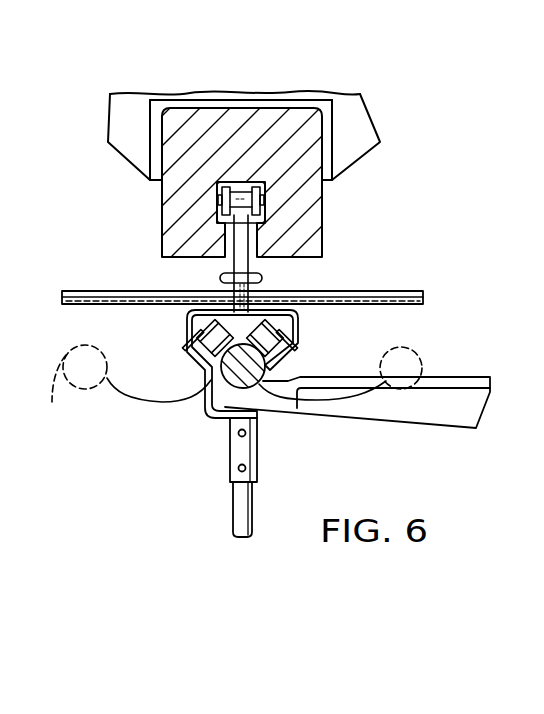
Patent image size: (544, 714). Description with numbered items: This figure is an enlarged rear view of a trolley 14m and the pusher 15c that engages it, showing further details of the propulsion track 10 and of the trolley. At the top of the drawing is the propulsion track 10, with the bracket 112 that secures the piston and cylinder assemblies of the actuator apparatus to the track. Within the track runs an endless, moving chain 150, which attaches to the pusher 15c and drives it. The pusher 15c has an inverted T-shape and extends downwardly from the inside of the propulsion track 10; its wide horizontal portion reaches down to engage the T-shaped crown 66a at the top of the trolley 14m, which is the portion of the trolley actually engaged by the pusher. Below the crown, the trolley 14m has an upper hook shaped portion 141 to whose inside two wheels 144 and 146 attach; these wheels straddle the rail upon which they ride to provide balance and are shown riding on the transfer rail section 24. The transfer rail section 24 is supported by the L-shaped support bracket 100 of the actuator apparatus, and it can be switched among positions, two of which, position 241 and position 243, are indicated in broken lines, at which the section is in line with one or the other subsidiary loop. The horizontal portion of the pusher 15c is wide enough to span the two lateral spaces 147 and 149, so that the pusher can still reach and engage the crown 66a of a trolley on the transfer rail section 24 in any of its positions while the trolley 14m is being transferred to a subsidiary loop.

The propulsion track 10 is at (182, 207).
The bracket 112 is at (327, 150).
The endless moving chain 150 is at (270, 188).
The T-shaped crown 66a is at (253, 277).
The pusher 15c is at (360, 290).
The upper hook shaped portion 141 is at (210, 410).
The wheel 144 is at (188, 326).
The wheel 146 is at (280, 333).
The transfer rail section 24 is at (263, 368).
The transfer rail section position 241 is at (74, 388).
The transfer rail section position 243 is at (404, 347).
The lateral space 147 is at (162, 402).
The lateral space 149 is at (318, 402).
The L-shaped support bracket 100 is at (455, 405).
The trolley 14m is at (248, 500).